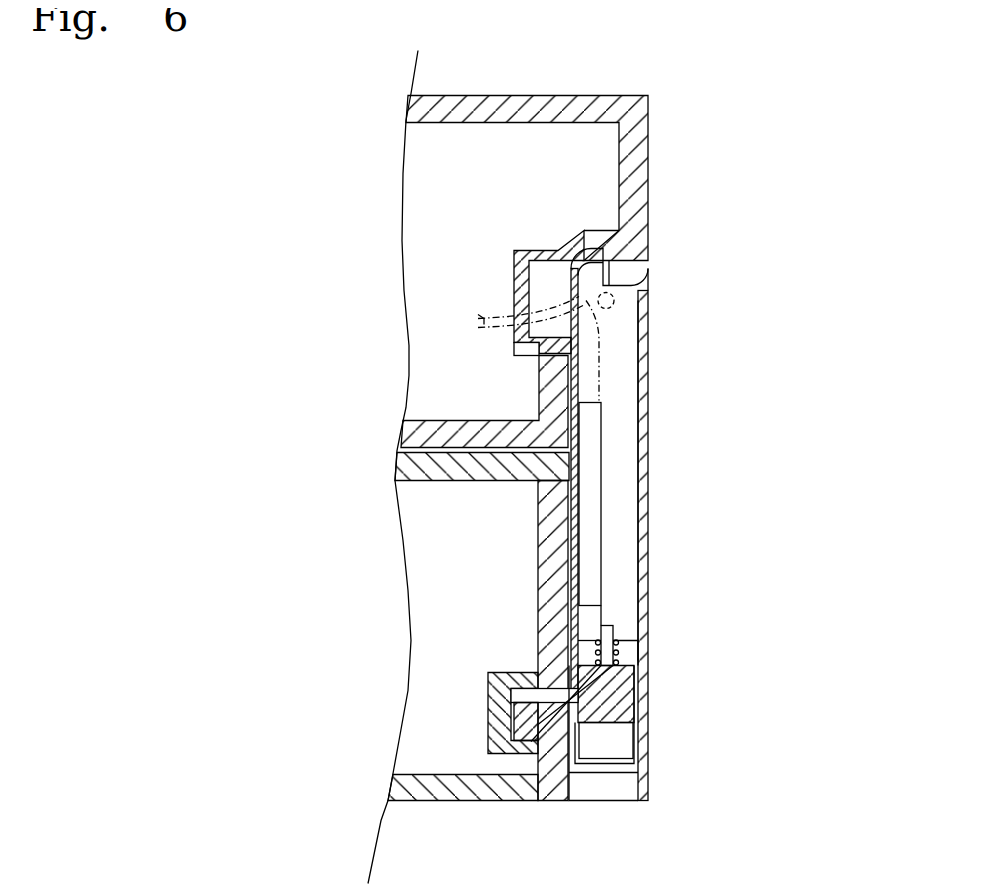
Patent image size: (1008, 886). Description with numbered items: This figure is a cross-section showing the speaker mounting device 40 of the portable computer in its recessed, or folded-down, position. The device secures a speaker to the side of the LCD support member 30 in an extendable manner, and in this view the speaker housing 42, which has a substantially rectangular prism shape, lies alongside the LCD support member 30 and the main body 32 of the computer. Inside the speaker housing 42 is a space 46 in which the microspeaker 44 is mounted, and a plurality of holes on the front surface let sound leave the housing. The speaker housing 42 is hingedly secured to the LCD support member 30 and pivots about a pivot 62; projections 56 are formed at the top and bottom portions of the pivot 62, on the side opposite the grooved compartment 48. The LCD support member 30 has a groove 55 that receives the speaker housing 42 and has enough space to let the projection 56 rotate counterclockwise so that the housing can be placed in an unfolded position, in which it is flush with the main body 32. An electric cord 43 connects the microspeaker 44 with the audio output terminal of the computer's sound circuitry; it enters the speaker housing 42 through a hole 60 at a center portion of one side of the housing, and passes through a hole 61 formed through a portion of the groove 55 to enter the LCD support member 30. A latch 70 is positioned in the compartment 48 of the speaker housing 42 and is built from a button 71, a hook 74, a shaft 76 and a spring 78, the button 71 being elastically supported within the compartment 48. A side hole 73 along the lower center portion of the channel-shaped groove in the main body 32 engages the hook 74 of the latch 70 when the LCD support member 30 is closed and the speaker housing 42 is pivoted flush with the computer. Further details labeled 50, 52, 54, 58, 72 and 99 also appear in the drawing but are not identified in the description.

The LCD support member 30 is at (650, 128).
The main body 32 is at (470, 800).
The speaker mounting device 40 is at (655, 380).
The speaker housing 42 is at (640, 520).
The electric cord 43 is at (603, 362).
The microspeaker 44 is at (601, 490).
The space 46 is at (633, 447).
The compartment 48 is at (632, 766).
The lock housing 50 is at (640, 705).
The bracket 52 is at (637, 640).
The spring 54 is at (630, 632).
The groove 55 is at (572, 252).
The projection 56 is at (600, 250).
The hook portion 58 is at (633, 275).
The hole 60 is at (570, 297).
The hole 61 is at (515, 332).
The pivot 62 is at (618, 300).
The latch 70 is at (604, 730).
The button 71 is at (632, 738).
The slider block 72 is at (620, 690).
The side hole 73 is at (510, 690).
The hook 74 is at (512, 720).
The shaft 76 is at (606, 625).
The spring 78 is at (590, 650).
The notch 99 is at (545, 333).